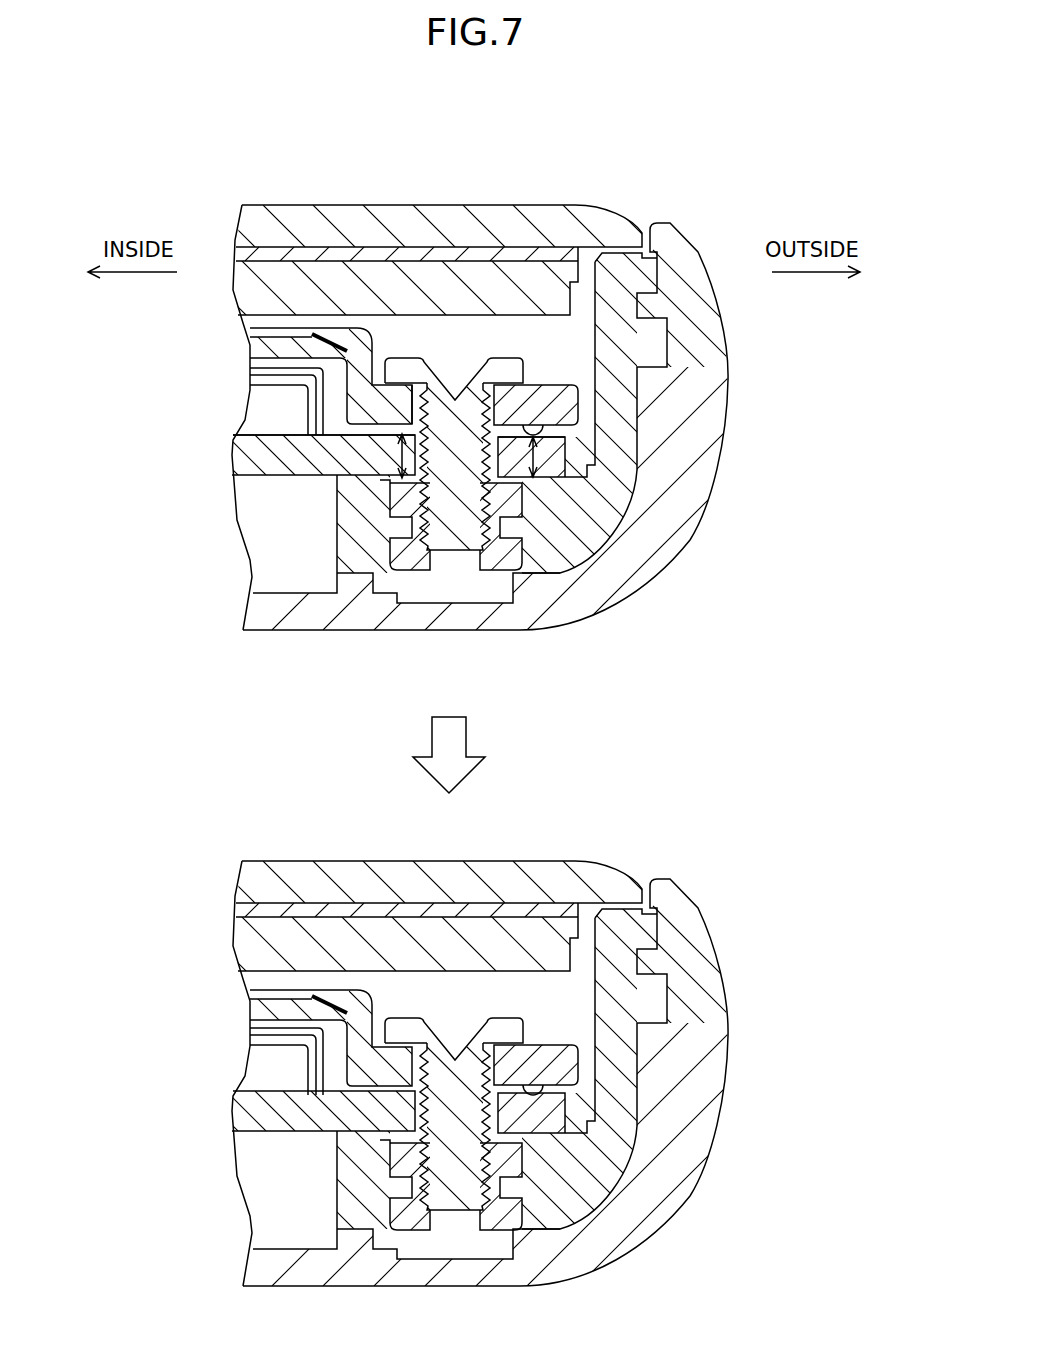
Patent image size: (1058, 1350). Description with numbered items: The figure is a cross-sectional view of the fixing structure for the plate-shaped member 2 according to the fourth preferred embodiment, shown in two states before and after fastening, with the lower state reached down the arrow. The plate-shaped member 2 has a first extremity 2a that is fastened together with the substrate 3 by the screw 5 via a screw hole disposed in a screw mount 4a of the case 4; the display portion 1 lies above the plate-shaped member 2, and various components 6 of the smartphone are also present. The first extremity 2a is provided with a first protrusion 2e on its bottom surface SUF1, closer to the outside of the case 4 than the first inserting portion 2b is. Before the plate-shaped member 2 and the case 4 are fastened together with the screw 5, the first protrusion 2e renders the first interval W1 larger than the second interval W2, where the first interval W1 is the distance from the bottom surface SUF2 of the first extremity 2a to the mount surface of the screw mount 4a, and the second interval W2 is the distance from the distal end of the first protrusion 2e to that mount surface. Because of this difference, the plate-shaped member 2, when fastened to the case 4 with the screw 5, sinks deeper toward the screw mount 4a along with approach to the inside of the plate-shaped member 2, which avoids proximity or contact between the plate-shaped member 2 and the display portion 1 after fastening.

The display portion 1 is at (552, 278).
The plate-shaped member 2 is at (338, 328).
The first extremity 2a is at (567, 393).
The first inserting portion 2b is at (480, 377).
The first protrusion 2e is at (537, 437).
The substrate 3 is at (243, 452).
The case 4 is at (635, 585).
The screw mount 4a is at (517, 507).
The screw 5 is at (405, 358).
The various components 6 is at (265, 402).
The bottom surface SUF1 is at (565, 436).
The bottom surface SUF2 is at (355, 434).
The first interval W1 is at (405, 463).
The second interval W2 is at (530, 453).